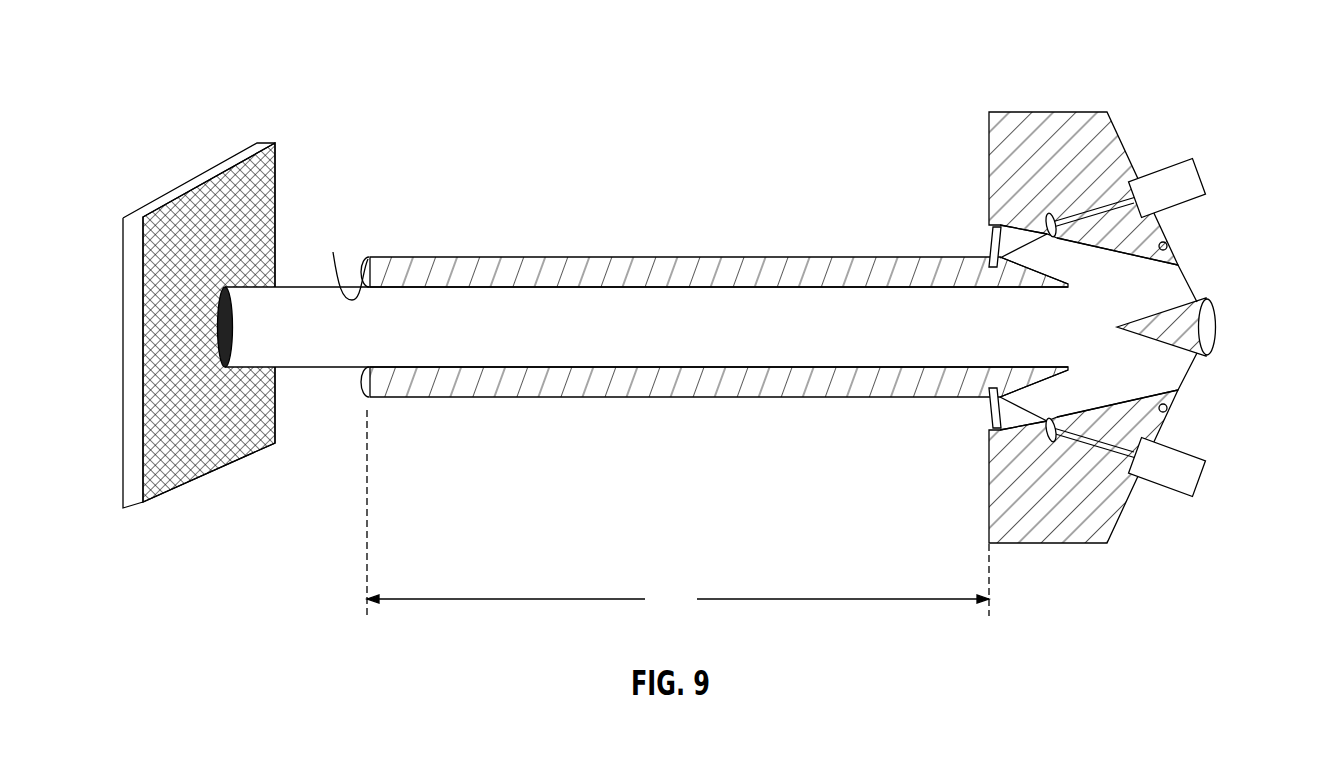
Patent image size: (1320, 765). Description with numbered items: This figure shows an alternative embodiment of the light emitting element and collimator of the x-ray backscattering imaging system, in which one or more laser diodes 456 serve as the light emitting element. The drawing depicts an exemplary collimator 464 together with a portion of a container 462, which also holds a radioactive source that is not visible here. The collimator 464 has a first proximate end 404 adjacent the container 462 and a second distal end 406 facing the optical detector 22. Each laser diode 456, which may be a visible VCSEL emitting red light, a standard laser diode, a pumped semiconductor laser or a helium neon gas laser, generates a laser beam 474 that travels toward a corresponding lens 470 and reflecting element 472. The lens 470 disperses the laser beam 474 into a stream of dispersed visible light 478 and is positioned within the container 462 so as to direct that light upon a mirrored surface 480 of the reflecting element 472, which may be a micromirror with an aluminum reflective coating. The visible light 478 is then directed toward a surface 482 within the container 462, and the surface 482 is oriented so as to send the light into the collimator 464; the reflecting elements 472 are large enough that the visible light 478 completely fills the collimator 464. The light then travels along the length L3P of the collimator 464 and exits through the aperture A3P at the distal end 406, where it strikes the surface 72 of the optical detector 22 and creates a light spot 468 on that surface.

The optical detector 22 is at (290, 148).
The surface of the optical detector 72 is at (262, 210).
The light spot 468 is at (224, 286).
The collimator 464 is at (676, 257).
The second distal end 406 is at (377, 405).
The first proximate end 404 is at (973, 410).
The container 462 is at (1046, 111).
The lens 470 is at (1048, 212).
The reflecting element 472 is at (987, 252).
The laser beam 474 is at (1113, 203).
The visible light 478 is at (1038, 232).
The mirrored surface 480 is at (1003, 238).
The surface 482 is at (1167, 243).
The laser diode 456 is at (1201, 172).
The aperture A3P is at (339, 260).
The length of the collimator L3P is at (678, 513).